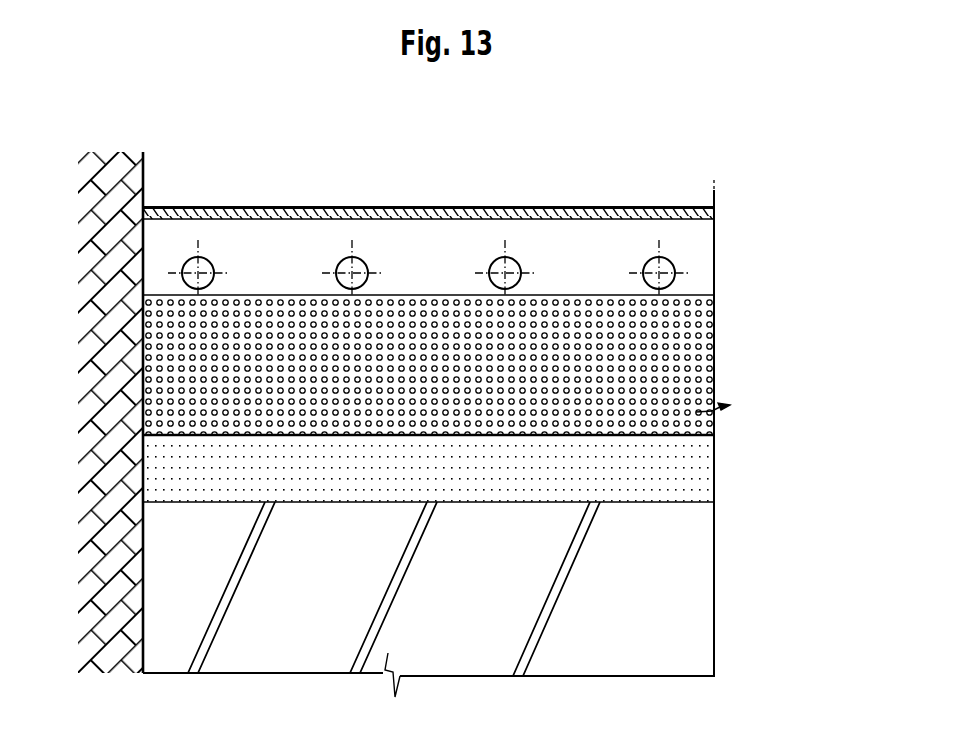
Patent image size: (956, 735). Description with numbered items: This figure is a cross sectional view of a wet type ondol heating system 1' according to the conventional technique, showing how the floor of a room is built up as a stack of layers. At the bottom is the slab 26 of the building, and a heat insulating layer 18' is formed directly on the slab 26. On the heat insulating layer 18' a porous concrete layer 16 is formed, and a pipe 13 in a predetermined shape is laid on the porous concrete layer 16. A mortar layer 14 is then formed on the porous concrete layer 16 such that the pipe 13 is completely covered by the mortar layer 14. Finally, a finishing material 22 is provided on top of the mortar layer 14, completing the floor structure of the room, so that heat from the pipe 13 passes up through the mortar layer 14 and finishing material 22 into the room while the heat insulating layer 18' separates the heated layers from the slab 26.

The wet type ondol heating system 1' is at (764, 386).
The pipe 13 is at (343, 262).
The mortar layer 14 is at (692, 250).
The porous concrete layer 16 is at (690, 353).
The heat insulating layer 18' is at (482, 469).
The finishing material 22 is at (447, 210).
The slab 26 is at (680, 602).